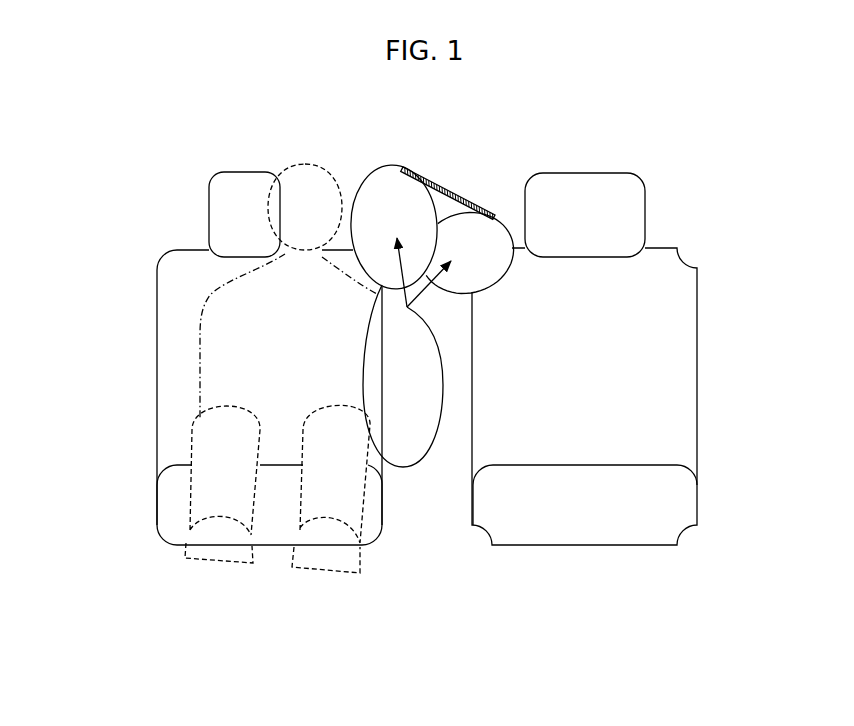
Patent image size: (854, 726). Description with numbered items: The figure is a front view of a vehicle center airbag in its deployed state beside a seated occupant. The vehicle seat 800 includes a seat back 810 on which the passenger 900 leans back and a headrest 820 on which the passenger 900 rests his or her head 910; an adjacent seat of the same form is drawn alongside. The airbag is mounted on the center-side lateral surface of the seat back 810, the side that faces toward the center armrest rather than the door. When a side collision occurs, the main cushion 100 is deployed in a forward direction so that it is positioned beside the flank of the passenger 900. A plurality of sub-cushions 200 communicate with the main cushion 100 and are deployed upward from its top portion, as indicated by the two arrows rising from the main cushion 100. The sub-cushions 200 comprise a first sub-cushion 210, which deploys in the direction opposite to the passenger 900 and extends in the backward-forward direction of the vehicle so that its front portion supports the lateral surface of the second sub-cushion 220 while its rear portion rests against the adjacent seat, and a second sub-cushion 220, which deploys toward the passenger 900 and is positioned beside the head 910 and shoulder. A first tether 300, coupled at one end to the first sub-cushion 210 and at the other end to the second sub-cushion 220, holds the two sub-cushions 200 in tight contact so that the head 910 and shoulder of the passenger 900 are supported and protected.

The main cushion 100 is at (418, 423).
The sub-cushions 200 is at (594, 454).
The first sub-cushion 210 is at (477, 272).
The second sub-cushion 220 is at (378, 178).
The first tether 300 is at (449, 188).
The seat 800 is at (138, 400).
The seat back 810 is at (177, 445).
The headrest 820 is at (244, 196).
The passenger 900 is at (180, 327).
The head 910 is at (300, 187).